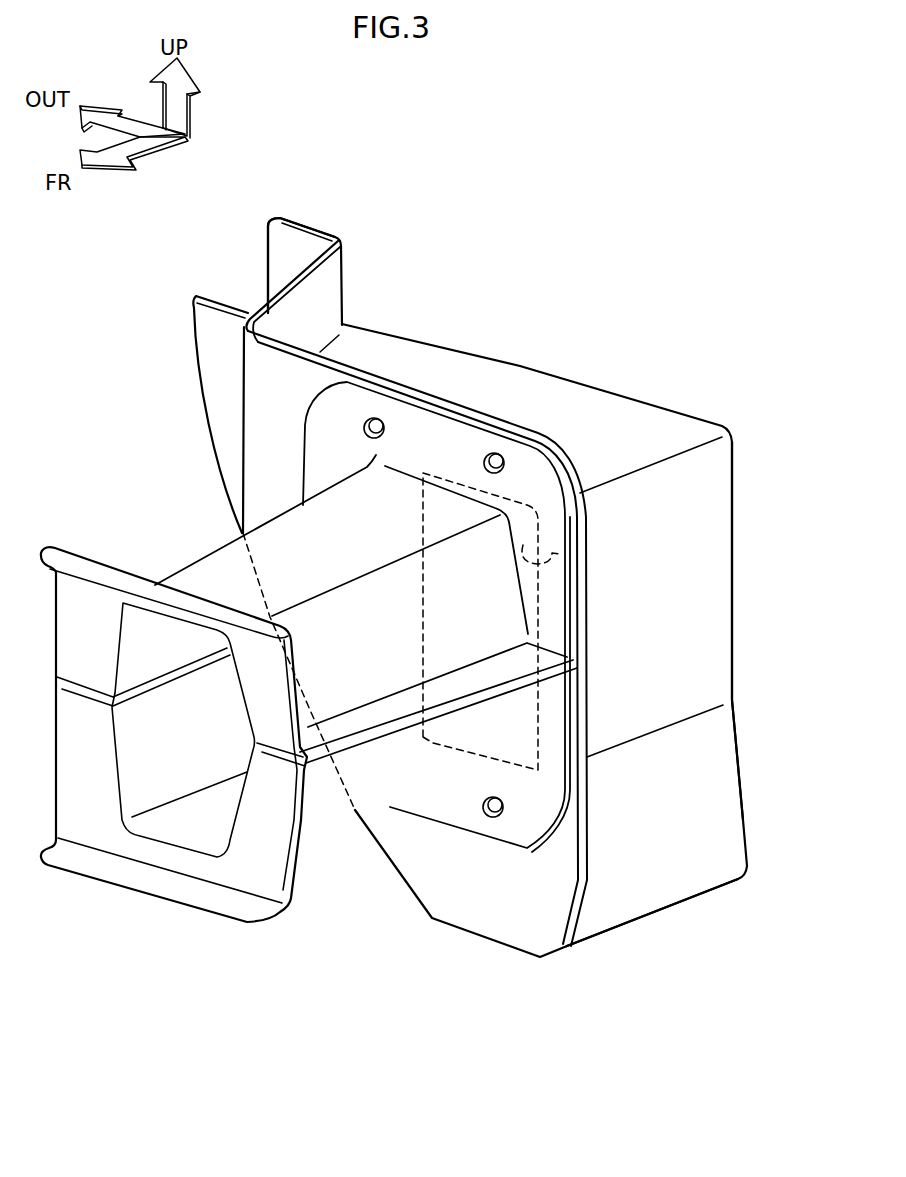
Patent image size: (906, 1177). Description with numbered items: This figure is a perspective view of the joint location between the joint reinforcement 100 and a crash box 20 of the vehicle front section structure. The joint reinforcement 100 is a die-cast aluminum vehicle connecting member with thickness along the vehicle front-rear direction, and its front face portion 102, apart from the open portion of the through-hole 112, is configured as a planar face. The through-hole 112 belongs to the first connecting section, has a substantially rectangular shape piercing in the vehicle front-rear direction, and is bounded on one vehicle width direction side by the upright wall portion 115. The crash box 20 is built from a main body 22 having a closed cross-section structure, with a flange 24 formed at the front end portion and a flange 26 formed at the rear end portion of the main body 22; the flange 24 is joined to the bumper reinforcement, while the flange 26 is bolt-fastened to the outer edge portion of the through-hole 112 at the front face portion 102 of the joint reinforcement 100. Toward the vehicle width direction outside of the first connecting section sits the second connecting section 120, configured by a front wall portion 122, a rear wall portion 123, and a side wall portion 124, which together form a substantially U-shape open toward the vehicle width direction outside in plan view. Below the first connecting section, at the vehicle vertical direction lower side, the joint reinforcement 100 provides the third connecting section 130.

The crash box 20 is at (190, 557).
The main body 22 is at (337, 810).
The flange 24 is at (290, 878).
The flange 26 is at (558, 618).
The joint reinforcement 100 is at (512, 348).
The front face portion 102 is at (527, 940).
The through-hole 112 is at (560, 554).
The upright wall portion 115 is at (723, 557).
The second connecting section 120 is at (333, 232).
The front wall portion 122 is at (203, 336).
The rear wall portion 123 is at (287, 215).
The side wall portion 124 is at (302, 282).
The third connecting section 130 is at (722, 810).